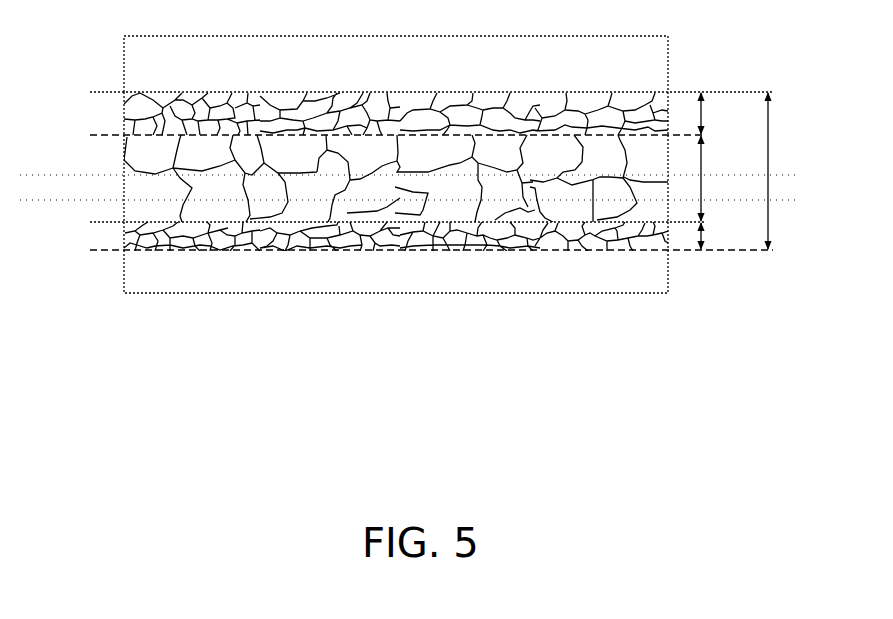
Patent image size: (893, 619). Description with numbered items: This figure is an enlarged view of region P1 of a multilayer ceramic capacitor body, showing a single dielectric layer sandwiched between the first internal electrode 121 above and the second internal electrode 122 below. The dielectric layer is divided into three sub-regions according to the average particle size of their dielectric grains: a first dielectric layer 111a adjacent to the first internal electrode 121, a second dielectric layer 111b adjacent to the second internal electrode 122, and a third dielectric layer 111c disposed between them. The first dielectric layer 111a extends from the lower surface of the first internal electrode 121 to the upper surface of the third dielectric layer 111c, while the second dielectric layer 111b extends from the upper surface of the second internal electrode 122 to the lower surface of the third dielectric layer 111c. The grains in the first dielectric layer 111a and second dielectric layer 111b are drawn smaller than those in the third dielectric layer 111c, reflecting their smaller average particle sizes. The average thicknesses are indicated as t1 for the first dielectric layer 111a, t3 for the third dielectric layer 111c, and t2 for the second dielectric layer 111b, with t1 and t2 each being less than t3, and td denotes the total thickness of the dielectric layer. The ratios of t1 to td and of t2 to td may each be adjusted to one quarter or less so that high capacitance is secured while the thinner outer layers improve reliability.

The first dielectric layer 111a is at (120, 92).
The second dielectric layer 111b is at (120, 222).
The third dielectric layer 111c is at (120, 135).
The first internal electrode 121 is at (656, 54).
The second internal electrode 122 is at (656, 278).
The average thickness of the first dielectric layer t1 is at (717, 113).
The average thickness of the second dielectric layer t2 is at (717, 236).
The average thickness of the third dielectric layer t3 is at (717, 178).
The thickness of the dielectric layer td is at (781, 171).
The region P1 is at (406, 360).